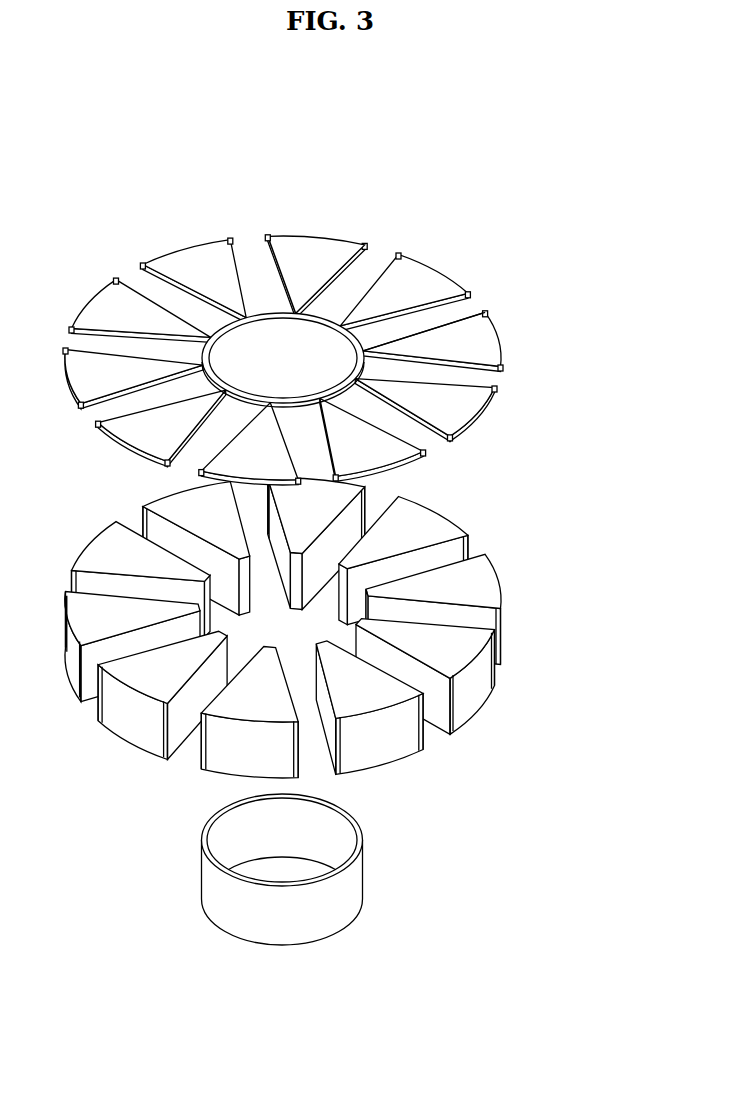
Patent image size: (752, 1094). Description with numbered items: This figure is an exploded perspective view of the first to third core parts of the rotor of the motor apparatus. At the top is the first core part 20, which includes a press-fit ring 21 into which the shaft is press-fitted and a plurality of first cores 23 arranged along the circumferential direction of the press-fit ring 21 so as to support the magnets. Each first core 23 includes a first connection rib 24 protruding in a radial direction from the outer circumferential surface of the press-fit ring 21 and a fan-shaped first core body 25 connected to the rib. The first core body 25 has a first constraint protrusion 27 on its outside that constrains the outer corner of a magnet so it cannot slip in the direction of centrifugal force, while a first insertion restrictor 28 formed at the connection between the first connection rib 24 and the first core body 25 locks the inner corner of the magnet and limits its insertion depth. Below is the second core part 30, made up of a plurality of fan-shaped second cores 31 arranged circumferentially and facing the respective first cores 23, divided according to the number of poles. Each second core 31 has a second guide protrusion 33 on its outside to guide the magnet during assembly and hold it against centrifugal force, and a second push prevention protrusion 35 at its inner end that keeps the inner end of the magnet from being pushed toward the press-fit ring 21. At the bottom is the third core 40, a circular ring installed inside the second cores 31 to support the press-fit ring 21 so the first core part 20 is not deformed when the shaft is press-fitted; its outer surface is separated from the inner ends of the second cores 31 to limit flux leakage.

The first core part 20 is at (314, 305).
The press-fit ring 21 is at (272, 313).
The first core 23 is at (335, 222).
The first connection rib 24 is at (300, 308).
The first core body 25 is at (316, 234).
The first constraint protrusion 27 is at (470, 296).
The first insertion restrictor 28 is at (372, 347).
The second core part 30 is at (335, 628).
The second core 31 is at (470, 594).
The second guide protrusion 33 is at (467, 538).
The second push prevention protrusion 35 is at (367, 588).
The third core 40 is at (343, 887).